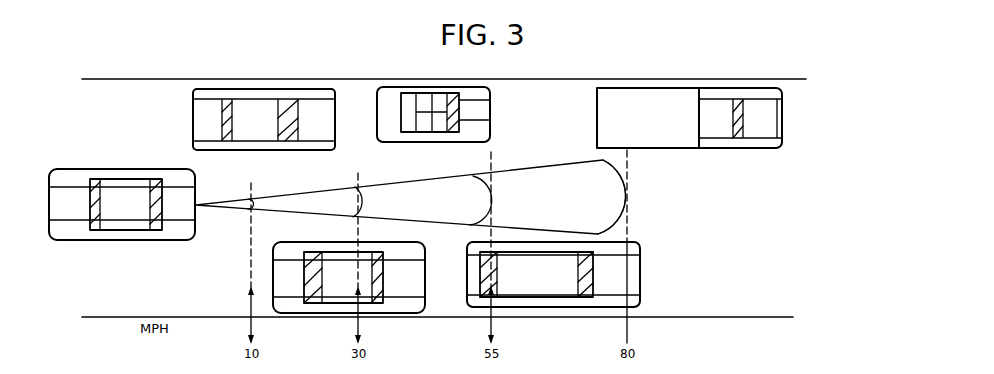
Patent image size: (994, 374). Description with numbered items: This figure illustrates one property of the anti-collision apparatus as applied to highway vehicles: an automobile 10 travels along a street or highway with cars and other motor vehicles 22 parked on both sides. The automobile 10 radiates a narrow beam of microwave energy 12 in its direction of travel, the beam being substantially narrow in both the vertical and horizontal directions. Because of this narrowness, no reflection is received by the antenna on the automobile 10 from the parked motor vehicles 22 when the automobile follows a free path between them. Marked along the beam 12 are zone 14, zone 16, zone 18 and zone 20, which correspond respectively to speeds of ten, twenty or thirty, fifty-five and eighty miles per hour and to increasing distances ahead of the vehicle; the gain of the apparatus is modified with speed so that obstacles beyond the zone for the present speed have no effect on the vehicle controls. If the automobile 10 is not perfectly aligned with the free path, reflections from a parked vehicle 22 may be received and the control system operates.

The automobile 10 is at (82, 173).
The beam of microwave energy 12 is at (451, 194).
The zone 14 is at (255, 203).
The zone 16 is at (361, 189).
The zone 18 is at (495, 197).
The zone 20 is at (629, 201).
The parked motor vehicles 22 is at (312, 90).